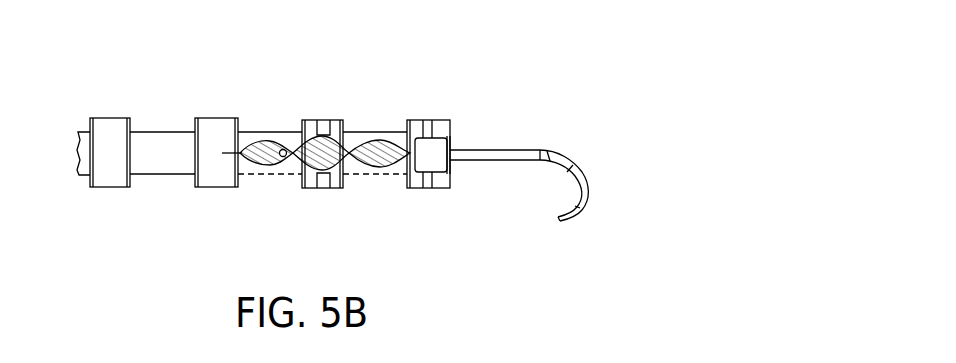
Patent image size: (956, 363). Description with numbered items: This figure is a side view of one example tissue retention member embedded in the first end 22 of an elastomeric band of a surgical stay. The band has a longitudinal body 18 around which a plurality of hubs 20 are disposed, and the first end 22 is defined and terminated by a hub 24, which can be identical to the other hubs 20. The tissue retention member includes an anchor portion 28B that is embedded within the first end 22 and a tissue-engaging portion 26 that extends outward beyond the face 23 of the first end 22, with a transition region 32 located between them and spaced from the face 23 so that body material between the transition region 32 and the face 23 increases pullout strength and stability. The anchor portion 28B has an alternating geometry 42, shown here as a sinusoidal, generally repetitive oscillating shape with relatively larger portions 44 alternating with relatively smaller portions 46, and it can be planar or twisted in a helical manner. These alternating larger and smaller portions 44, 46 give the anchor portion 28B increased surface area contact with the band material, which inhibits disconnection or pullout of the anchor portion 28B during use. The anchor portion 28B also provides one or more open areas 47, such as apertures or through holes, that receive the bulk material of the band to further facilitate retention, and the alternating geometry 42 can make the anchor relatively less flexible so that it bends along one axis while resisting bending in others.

The longitudinal body 18 is at (165, 133).
The hubs 20 is at (110, 187).
The first end 22 is at (483, 87).
The face 23 is at (462, 180).
The hub 24 is at (442, 188).
The tissue-engaging portion 26 is at (588, 190).
The anchor portion 28B is at (273, 120).
The transition region 32 is at (437, 146).
The alternating geometry 42 is at (332, 144).
The relatively larger portions 44 is at (384, 180).
The relatively smaller portions 46 is at (357, 178).
The open areas 47 is at (276, 171).